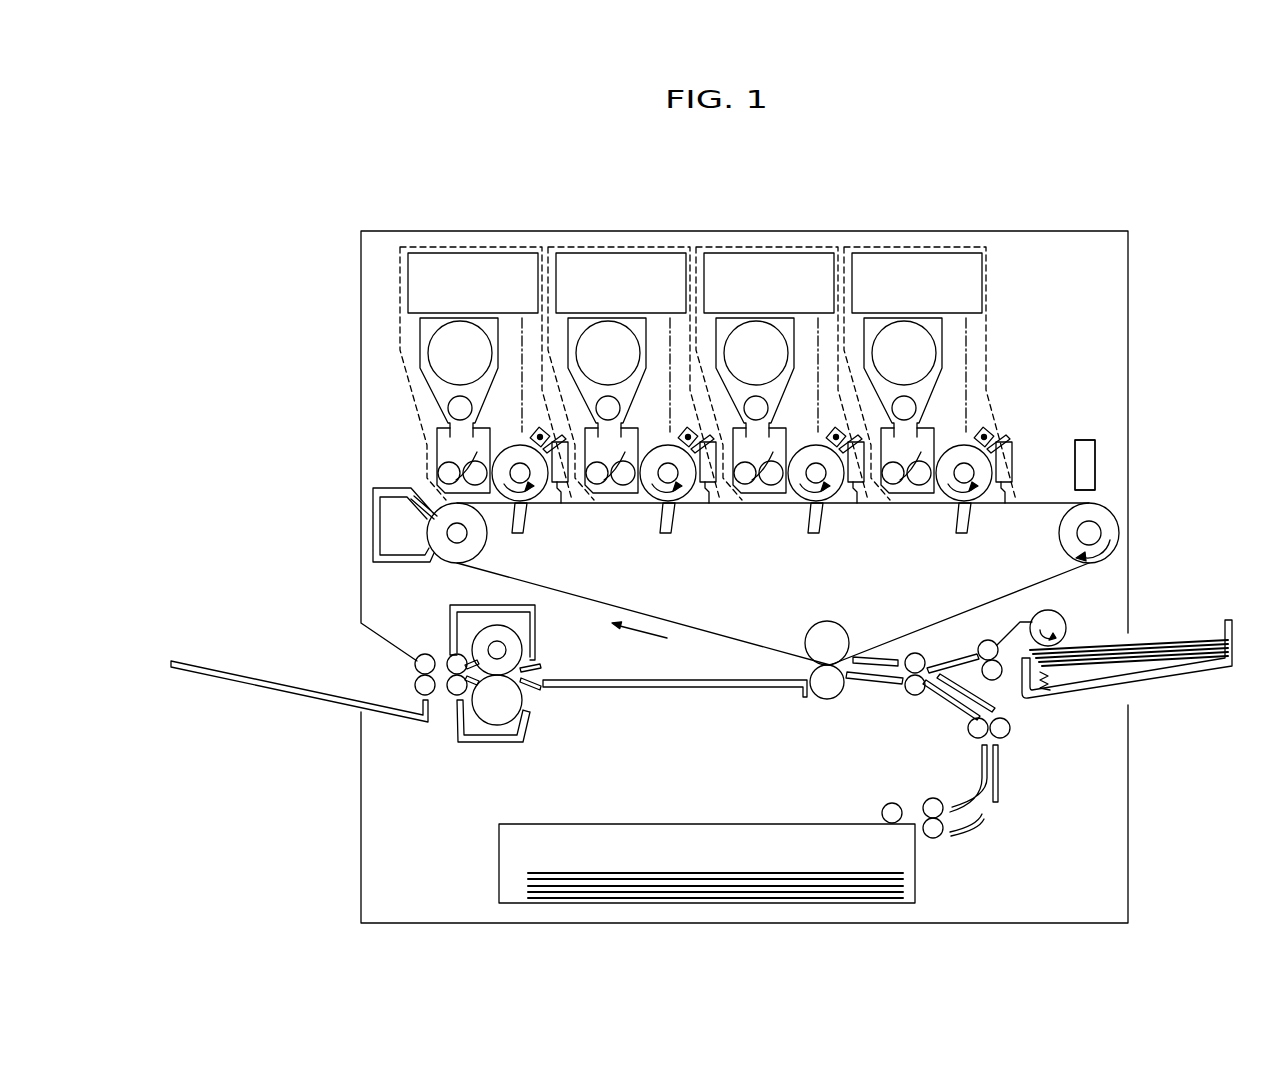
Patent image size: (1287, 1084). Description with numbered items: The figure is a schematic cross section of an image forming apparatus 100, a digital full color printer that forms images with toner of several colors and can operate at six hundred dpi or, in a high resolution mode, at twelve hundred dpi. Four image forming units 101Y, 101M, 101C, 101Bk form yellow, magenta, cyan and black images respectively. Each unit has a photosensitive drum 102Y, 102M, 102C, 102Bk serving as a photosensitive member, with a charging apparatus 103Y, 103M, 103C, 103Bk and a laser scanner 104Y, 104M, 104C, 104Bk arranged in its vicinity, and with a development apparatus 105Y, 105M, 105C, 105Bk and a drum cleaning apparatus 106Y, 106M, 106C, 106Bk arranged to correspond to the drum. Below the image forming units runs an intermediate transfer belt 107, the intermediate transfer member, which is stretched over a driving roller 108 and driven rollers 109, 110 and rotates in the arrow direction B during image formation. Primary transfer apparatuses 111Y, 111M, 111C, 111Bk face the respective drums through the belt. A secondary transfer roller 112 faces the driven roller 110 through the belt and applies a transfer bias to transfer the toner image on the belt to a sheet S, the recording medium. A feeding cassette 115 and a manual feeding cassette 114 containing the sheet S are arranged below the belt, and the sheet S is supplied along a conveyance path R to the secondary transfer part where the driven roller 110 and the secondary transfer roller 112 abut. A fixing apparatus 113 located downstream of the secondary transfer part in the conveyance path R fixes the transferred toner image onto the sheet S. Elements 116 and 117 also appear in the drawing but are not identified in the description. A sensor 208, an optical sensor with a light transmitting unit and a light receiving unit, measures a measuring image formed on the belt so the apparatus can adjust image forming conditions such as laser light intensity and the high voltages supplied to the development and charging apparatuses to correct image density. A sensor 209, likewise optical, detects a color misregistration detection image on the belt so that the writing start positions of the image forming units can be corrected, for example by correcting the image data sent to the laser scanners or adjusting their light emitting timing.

The image forming apparatus 100 is at (1058, 230).
The image forming unit 101Y is at (445, 247).
The image forming unit 101M is at (593, 247).
The image forming unit 101C is at (741, 247).
The image forming unit 101Bk is at (889, 247).
The photosensitive drum 102Y is at (512, 504).
The photosensitive drum 102M is at (652, 502).
The photosensitive drum 102C is at (800, 502).
The photosensitive drum 102Bk is at (948, 502).
The charging apparatus 103Y is at (543, 430).
The charging apparatus 103M is at (691, 430).
The charging apparatus 103C is at (839, 430).
The charging apparatus 103Bk is at (987, 430).
The laser scanner 104Y is at (480, 253).
The laser scanner 104M is at (628, 253).
The laser scanner 104C is at (776, 253).
The laser scanner 104Bk is at (924, 253).
The development apparatus 105Y is at (445, 458).
The development apparatus 105M is at (612, 500).
The development apparatus 105C is at (760, 500).
The development apparatus 105Bk is at (908, 500).
The drum cleaning apparatus 106Y is at (558, 490).
The drum cleaning apparatus 106M is at (706, 493).
The drum cleaning apparatus 106C is at (854, 493).
The drum cleaning apparatus 106Bk is at (1002, 493).
The intermediate transfer belt 107 is at (693, 628).
The driving roller 108 is at (1110, 512).
The driven roller 109 is at (453, 553).
The driven roller 110 is at (838, 633).
The primary transfer apparatus 111Y is at (525, 533).
The primary transfer apparatus 111M is at (673, 532).
The primary transfer apparatus 111C is at (821, 532).
The primary transfer apparatus 111Bk is at (969, 532).
The secondary transfer roller 112 is at (827, 700).
The fixing apparatus 113 is at (482, 742).
The manual feeding cassette 114 is at (1163, 686).
The feeding cassette 115 is at (499, 855).
The discharge rollers 116 is at (415, 684).
The discharge tray 117 is at (262, 688).
The sensor 208 is at (1090, 440).
The sensor 209 is at (1085, 465).
The sheet S is at (1166, 640).
The conveyance path R is at (885, 677).
The arrow direction B is at (639, 643).